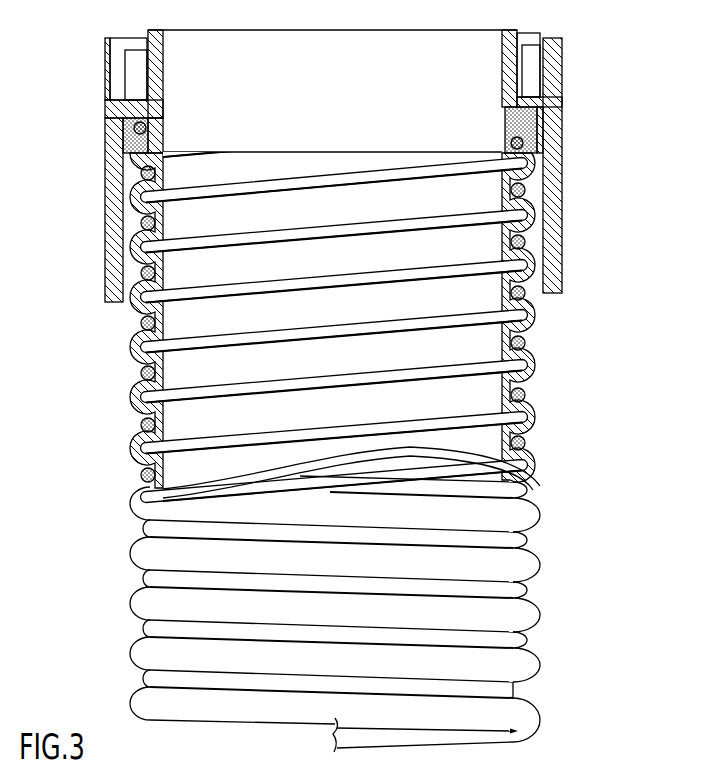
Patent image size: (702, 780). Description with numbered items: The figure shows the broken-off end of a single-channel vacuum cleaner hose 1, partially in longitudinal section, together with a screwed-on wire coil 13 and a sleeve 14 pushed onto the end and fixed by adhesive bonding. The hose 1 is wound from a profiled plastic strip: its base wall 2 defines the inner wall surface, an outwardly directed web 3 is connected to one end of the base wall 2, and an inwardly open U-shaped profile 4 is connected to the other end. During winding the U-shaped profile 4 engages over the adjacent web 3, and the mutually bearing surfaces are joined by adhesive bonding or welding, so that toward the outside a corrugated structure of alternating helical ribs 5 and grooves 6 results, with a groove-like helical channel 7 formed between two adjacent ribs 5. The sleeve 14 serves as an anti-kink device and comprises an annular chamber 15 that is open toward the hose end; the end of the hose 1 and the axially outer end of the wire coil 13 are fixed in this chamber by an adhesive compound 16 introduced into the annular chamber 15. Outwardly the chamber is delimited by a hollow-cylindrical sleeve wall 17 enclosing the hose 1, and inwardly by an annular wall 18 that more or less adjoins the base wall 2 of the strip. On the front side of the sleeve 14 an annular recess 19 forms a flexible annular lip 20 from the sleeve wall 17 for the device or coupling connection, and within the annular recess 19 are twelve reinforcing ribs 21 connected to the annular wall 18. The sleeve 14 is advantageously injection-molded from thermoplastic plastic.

The single-channel hose 1 is at (158, 728).
The base wall 2 is at (158, 222).
The web 3 is at (130, 186).
The U-shaped profile 4 is at (140, 268).
The ribs 5 is at (548, 316).
The grooves 6 is at (158, 676).
The helical channel 7 is at (535, 697).
The wire coil 13 is at (540, 448).
The sleeve 14 is at (98, 204).
The annular chamber 15 is at (548, 95).
The adhesive compound 16 is at (541, 130).
The sleeve wall 17 is at (563, 202).
The annular wall 18 is at (155, 98).
The annular recess 19 is at (117, 58).
The annular lip 20 is at (557, 60).
The reinforcing ribs 21 is at (138, 75).